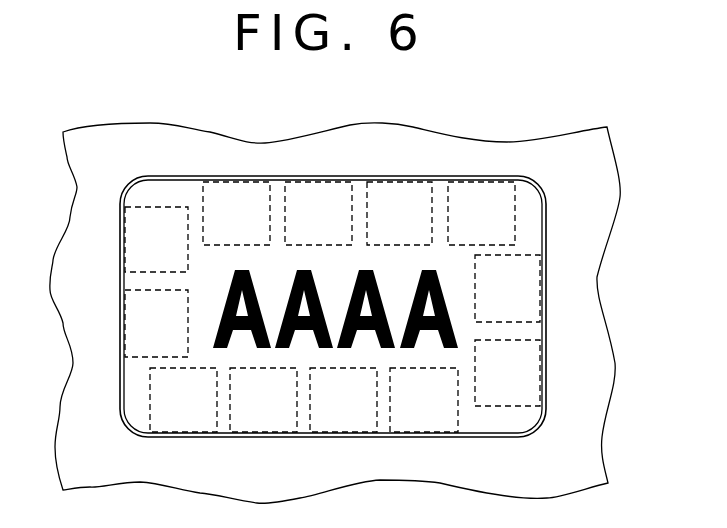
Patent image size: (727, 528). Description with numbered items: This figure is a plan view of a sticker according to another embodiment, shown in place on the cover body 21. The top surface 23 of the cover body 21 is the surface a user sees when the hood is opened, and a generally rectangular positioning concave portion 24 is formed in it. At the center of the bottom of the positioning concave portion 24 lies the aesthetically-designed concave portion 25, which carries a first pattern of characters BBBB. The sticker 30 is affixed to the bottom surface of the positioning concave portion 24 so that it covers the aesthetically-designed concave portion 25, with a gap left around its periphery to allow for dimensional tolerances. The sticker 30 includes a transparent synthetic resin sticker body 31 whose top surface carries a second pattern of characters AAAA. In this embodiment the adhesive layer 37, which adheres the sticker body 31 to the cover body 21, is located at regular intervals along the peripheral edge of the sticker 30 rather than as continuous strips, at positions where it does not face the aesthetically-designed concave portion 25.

The cover body 21 is at (352, 313).
The top surface 23 is at (586, 416).
The positioning concave portion 24 is at (543, 227).
The aesthetically-designed concave portion 25 is at (447, 290).
The sticker 30 is at (190, 194).
The sticker body 31 is at (279, 190).
The adhesive layer 37 is at (119, 308).